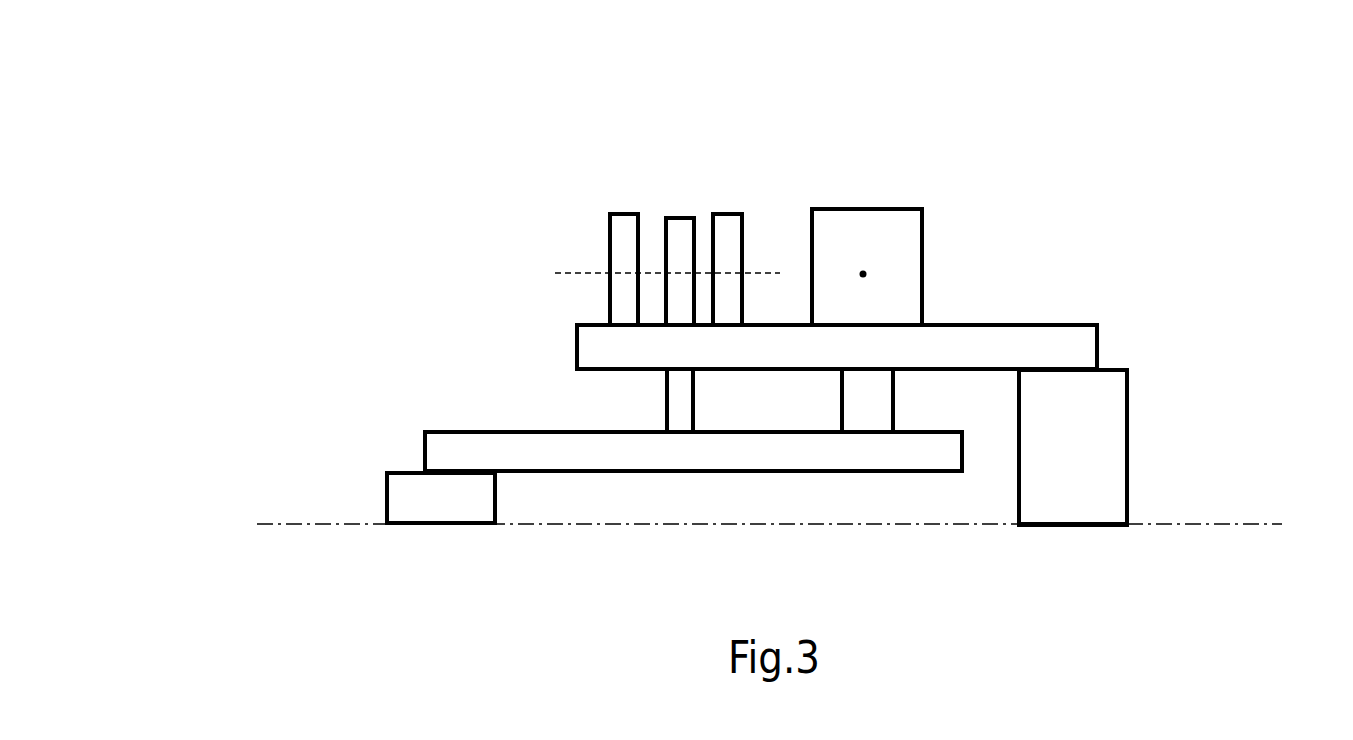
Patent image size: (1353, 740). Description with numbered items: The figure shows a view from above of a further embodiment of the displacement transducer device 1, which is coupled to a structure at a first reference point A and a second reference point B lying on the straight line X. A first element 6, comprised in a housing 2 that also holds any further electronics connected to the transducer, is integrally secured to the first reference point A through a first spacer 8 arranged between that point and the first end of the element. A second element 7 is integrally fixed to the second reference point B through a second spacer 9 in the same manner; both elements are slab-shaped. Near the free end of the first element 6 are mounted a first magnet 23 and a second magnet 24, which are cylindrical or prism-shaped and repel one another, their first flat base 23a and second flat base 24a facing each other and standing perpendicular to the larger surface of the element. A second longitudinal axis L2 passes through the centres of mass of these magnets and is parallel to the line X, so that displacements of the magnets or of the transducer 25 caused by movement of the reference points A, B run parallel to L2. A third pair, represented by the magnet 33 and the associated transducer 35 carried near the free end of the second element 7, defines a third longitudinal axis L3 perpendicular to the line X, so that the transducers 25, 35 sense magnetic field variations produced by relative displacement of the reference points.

The displacement transducer device 1 is at (1156, 195).
The housing 2 is at (1016, 329).
The first element 6 is at (1098, 330).
The second element 7 is at (423, 452).
The first spacer 8 is at (1103, 477).
The second spacer 9 is at (402, 488).
The first magnet 23 is at (606, 230).
The first flat base 23a is at (652, 230).
The second magnet 24 is at (747, 230).
The second flat base 24a is at (708, 230).
The transducer 25 is at (674, 228).
The first magnet of third pair 33 is at (907, 222).
The transducer 35 is at (930, 243).
The second longitudinal axis L2 is at (570, 272).
The third longitudinal axis L3 is at (861, 270).
The straight line X is at (283, 525).
The first reference point A is at (1073, 518).
The second reference point B is at (447, 525).